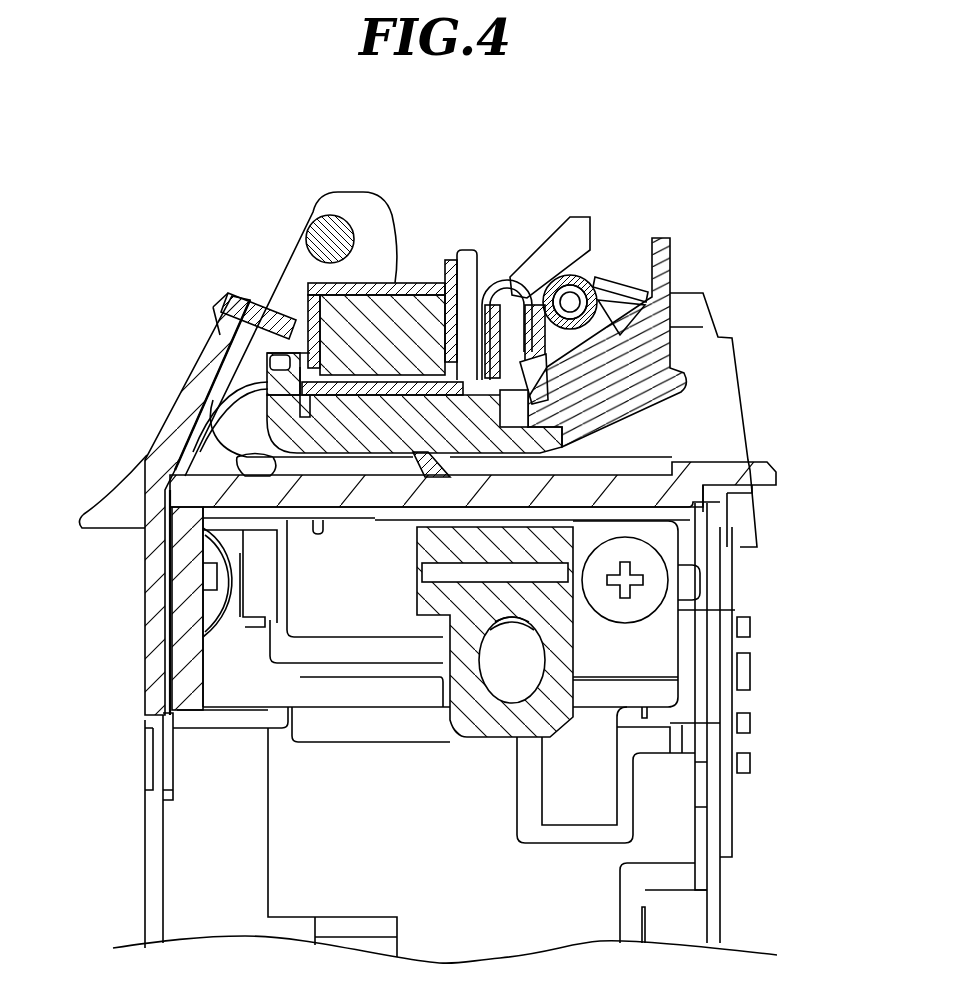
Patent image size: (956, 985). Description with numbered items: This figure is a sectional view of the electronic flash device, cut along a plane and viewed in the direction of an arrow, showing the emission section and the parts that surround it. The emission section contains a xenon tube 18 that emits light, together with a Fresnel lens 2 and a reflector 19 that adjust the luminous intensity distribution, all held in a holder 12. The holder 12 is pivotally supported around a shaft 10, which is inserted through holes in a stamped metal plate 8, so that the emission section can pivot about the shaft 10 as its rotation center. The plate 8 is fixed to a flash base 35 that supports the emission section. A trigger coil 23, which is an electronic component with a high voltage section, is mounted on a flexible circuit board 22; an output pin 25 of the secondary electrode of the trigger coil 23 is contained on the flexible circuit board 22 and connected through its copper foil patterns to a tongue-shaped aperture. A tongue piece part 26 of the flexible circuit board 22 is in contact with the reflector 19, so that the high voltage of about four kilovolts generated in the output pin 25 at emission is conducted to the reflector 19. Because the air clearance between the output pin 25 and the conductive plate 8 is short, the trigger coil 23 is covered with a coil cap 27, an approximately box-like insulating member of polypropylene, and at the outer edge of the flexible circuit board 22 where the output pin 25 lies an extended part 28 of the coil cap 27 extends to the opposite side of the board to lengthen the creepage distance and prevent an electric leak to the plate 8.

The Fresnel lens 2 is at (640, 332).
The plate 8 is at (233, 323).
The shaft 10 is at (322, 222).
The holder 12 is at (540, 457).
The xenon tube 18 is at (572, 302).
The reflector 19 is at (623, 283).
The flexible circuit board 22 is at (227, 378).
The trigger coil 23 is at (410, 323).
The output pin 25 is at (317, 350).
The tongue piece part 26 is at (522, 330).
The coil cap 27 is at (363, 293).
The extended part 28 is at (295, 382).
The flash base 35 is at (185, 583).